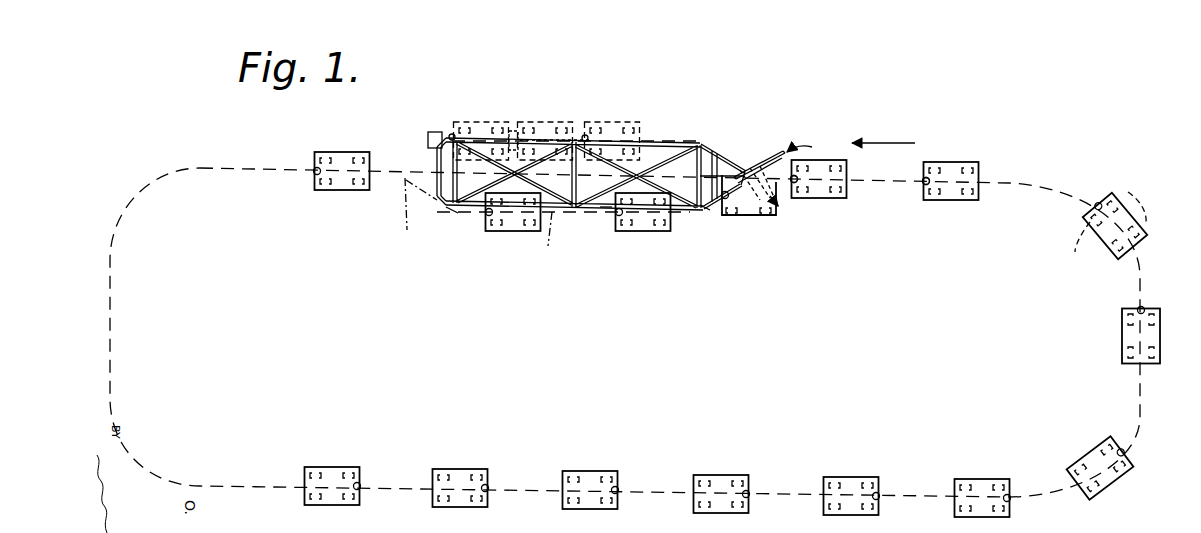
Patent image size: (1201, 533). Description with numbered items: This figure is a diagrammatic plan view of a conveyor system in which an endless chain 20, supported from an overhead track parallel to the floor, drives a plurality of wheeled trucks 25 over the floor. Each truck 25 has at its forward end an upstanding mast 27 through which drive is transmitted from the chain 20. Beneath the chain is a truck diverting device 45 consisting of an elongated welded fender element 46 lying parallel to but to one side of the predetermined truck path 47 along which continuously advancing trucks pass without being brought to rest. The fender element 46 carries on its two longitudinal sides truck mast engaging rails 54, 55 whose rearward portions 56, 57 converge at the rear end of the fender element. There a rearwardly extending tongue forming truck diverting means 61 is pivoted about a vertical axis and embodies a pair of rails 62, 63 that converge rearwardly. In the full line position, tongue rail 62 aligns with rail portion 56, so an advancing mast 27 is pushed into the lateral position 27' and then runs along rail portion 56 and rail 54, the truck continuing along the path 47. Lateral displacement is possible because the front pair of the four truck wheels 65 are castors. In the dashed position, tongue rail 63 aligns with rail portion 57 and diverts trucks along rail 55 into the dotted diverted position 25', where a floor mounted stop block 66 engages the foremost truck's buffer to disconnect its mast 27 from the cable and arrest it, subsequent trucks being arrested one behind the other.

The endless chain 20 is at (204, 170).
The wheeled truck 25 is at (752, 328).
The diverted truck position 25' is at (576, 125).
The mast 27 is at (860, 186).
The lateral mast position 27' is at (750, 214).
The truck diverting device 45 is at (699, 139).
The fender element 46 is at (462, 208).
The truck path 47 is at (482, 222).
The truck mast engaging rail 54 is at (606, 207).
The truck mast engaging rail 55 is at (536, 140).
The rearward rail portion 56 is at (705, 207).
The rearward rail portion 57 is at (715, 162).
The truck diverting means 61 is at (745, 174).
The tongue rail 62 is at (814, 145).
The tongue rail 63 is at (758, 160).
The truck wheels 65 is at (1100, 255).
The stop block 66 is at (430, 132).